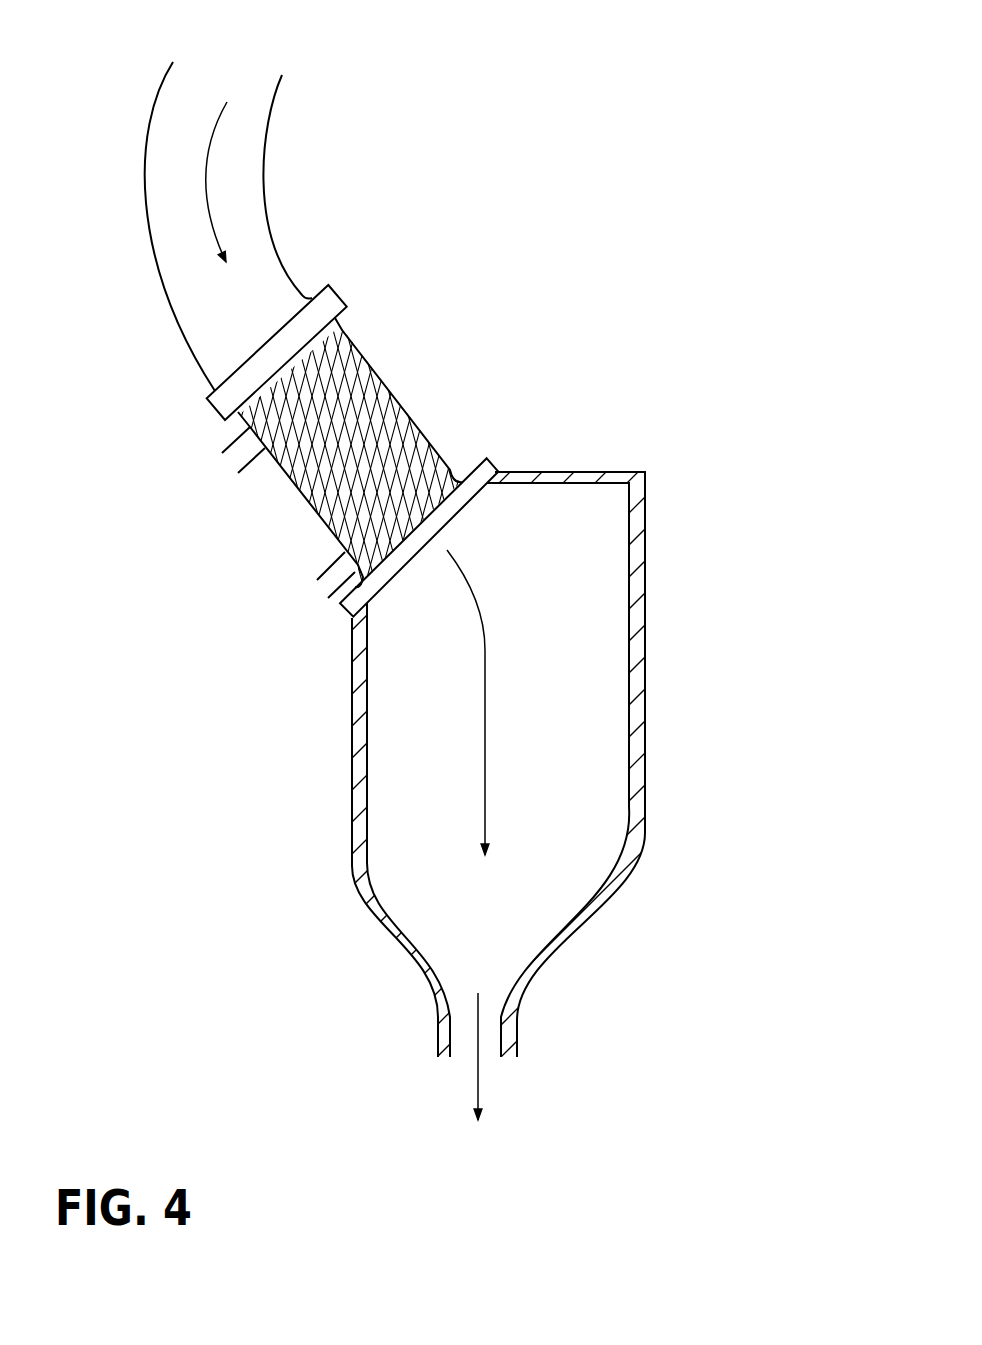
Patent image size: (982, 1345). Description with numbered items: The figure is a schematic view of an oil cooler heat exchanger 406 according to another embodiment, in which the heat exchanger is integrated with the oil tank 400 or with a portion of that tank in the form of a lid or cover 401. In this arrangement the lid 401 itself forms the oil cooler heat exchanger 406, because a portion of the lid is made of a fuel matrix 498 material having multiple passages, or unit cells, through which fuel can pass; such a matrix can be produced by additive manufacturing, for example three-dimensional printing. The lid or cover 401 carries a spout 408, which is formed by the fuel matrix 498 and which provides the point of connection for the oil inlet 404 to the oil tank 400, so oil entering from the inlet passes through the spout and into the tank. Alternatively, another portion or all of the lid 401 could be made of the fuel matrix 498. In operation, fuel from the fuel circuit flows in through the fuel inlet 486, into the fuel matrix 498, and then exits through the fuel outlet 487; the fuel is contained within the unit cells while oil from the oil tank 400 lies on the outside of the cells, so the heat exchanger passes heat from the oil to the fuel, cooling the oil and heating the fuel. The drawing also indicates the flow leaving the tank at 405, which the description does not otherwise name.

The oil tank 400 is at (667, 675).
The lid or cover 401 is at (465, 487).
The oil inlet 404 is at (228, 226).
The outlet flow 405 is at (477, 1072).
The oil cooler heat exchanger 406 is at (712, 152).
The spout 408 is at (383, 320).
The fuel inlet 486 is at (240, 455).
The fuel outlet 487 is at (343, 550).
The fuel matrix 498 is at (352, 415).